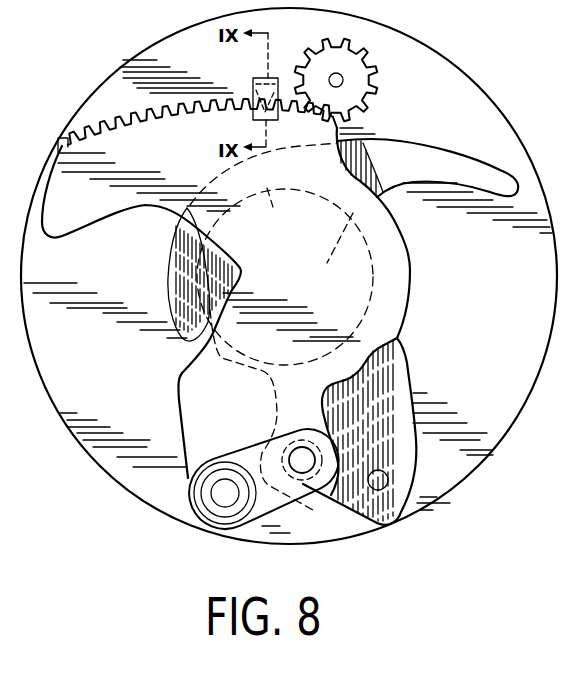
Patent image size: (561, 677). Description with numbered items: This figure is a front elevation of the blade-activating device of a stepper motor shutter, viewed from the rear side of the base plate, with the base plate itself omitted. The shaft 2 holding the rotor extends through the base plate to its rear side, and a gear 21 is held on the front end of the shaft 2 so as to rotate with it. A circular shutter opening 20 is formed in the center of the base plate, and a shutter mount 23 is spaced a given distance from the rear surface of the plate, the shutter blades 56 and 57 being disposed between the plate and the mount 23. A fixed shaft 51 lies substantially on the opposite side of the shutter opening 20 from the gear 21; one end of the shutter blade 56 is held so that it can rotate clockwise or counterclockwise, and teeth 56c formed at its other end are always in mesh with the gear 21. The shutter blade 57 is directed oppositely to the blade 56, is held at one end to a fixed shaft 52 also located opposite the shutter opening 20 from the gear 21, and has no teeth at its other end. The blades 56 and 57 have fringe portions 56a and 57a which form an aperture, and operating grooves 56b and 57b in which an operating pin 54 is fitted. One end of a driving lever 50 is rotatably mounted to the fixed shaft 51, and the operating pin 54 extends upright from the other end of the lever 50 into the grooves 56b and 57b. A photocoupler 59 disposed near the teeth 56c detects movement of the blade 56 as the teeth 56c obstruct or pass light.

The shaft 2 is at (333, 76).
The shutter opening 20 is at (281, 254).
The gear 21 is at (378, 74).
The shutter mount 23 is at (494, 447).
The driving lever 50 is at (243, 452).
The fixed shaft 51 is at (220, 494).
The fixed shaft 52 is at (382, 480).
The operating pin 54 is at (302, 455).
The shutter blade 56 is at (190, 381).
The fringe portion 56a is at (172, 247).
The operating groove 56b is at (268, 527).
The teeth 56c is at (88, 130).
The shutter blade 57 is at (398, 372).
The fringe portion 57a is at (392, 222).
The operating groove 57b is at (335, 455).
The photocoupler 59 is at (264, 78).